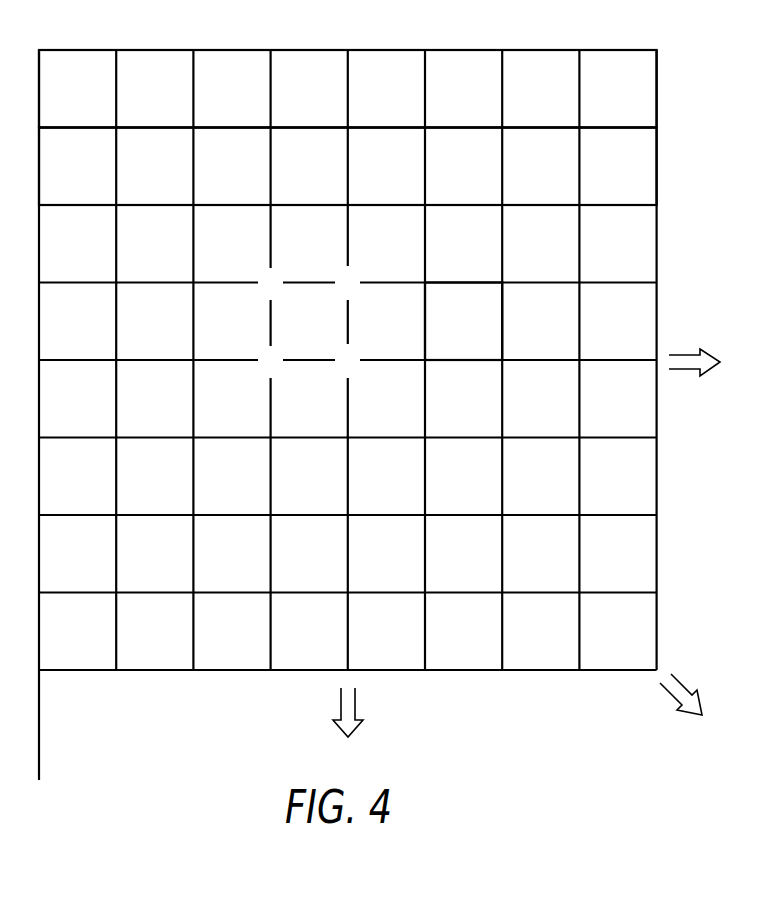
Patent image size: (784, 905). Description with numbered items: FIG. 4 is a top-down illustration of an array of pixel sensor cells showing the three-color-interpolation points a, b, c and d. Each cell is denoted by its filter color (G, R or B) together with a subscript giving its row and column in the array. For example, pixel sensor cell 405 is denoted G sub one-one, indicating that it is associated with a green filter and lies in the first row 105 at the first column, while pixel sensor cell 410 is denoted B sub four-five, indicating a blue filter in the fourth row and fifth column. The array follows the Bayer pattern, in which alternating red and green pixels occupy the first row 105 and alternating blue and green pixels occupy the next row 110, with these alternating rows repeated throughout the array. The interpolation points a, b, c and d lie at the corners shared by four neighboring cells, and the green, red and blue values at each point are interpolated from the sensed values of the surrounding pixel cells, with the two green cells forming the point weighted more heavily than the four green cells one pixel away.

The pixel sensor cell 405 is at (384, 393).
The pixel sensor cell 410 is at (403, 295).
The first row 105 is at (657, 88).
The next row 110 is at (657, 165).